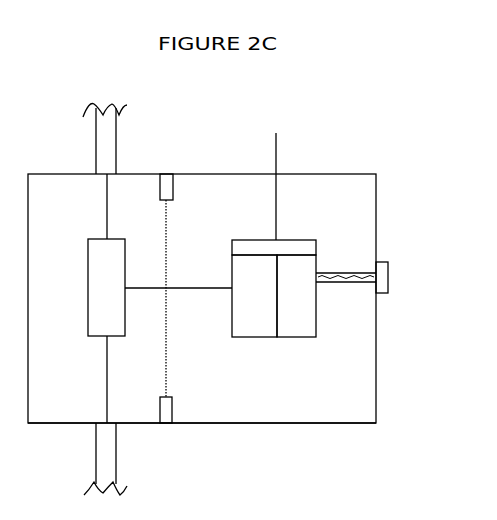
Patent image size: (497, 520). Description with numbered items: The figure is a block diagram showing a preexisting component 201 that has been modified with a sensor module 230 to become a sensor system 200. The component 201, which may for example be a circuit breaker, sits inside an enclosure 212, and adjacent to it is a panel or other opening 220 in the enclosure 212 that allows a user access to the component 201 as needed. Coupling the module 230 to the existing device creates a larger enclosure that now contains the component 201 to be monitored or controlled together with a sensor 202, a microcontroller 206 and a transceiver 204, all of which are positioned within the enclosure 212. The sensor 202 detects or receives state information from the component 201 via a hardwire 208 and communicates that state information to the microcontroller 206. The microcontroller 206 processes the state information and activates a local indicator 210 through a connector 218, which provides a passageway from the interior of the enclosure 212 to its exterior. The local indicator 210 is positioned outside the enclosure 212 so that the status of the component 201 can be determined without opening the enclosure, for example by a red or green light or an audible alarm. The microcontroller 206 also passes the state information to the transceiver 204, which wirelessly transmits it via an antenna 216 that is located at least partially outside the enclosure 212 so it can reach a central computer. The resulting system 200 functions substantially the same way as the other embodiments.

The sensor system 200 is at (413, 137).
The component 201 is at (98, 270).
The sensor 202 is at (245, 320).
The transceiver 204 is at (297, 248).
The microcontroller 206 is at (293, 322).
The hardwire 208 is at (207, 288).
The local indicator 210 is at (382, 273).
The enclosure 212 is at (140, 423).
The antenna 216 is at (277, 160).
The connector 218 is at (345, 285).
The panel or other opening 220 is at (376, 395).
The sensor module 230 is at (297, 433).